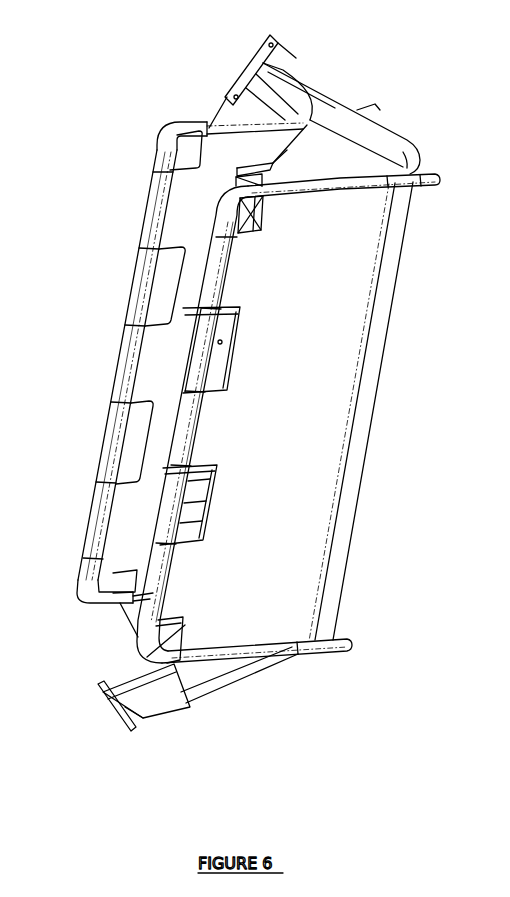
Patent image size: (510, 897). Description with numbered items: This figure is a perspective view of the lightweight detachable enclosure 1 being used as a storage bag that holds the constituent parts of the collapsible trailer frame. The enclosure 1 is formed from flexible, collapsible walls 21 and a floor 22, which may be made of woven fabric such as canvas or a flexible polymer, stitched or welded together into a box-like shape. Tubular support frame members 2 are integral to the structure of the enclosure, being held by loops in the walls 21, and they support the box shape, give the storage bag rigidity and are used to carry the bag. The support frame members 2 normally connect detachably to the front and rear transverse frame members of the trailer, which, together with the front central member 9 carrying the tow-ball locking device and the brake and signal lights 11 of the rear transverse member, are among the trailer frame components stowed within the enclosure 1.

The lightweight detachable enclosure 1 is at (250, 412).
The support frame members 2 is at (142, 331).
The front central member 9 is at (149, 720).
The brake and signal lights 11 is at (120, 531).
The flexible collapsible walls 21 is at (254, 412).
The floor 22 is at (375, 411).